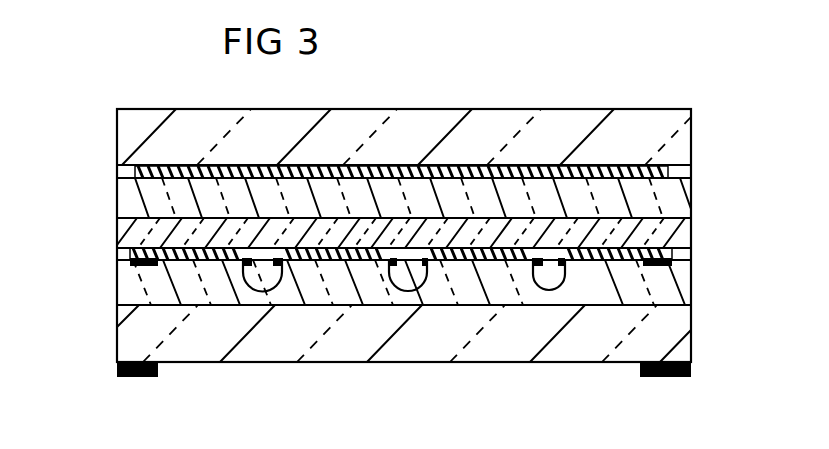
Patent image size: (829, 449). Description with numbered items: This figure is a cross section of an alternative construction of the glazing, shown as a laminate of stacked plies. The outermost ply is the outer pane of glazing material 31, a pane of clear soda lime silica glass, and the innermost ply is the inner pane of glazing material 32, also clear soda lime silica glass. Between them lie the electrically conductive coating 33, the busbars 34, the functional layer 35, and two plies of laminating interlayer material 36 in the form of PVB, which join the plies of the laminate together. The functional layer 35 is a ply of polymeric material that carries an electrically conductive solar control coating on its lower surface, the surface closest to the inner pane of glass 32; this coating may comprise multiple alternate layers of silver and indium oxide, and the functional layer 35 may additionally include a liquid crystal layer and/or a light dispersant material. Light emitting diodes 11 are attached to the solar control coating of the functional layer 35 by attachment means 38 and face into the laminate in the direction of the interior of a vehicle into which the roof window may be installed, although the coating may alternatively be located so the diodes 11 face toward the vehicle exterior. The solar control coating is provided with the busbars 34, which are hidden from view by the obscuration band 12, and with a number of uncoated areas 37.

The light emitting diodes 11 is at (405, 275).
The obscuration band 12 is at (133, 378).
The outer pane of glazing material 31 is at (664, 128).
The inner pane of glazing material 32 is at (135, 330).
The electrically conductive coating 33 is at (590, 167).
The busbars 34 is at (130, 262).
The functional layer 35 is at (702, 236).
The laminating interlayer material 36 is at (132, 188).
The uncoated areas 37 is at (269, 258).
The attachment means 38 is at (245, 265).